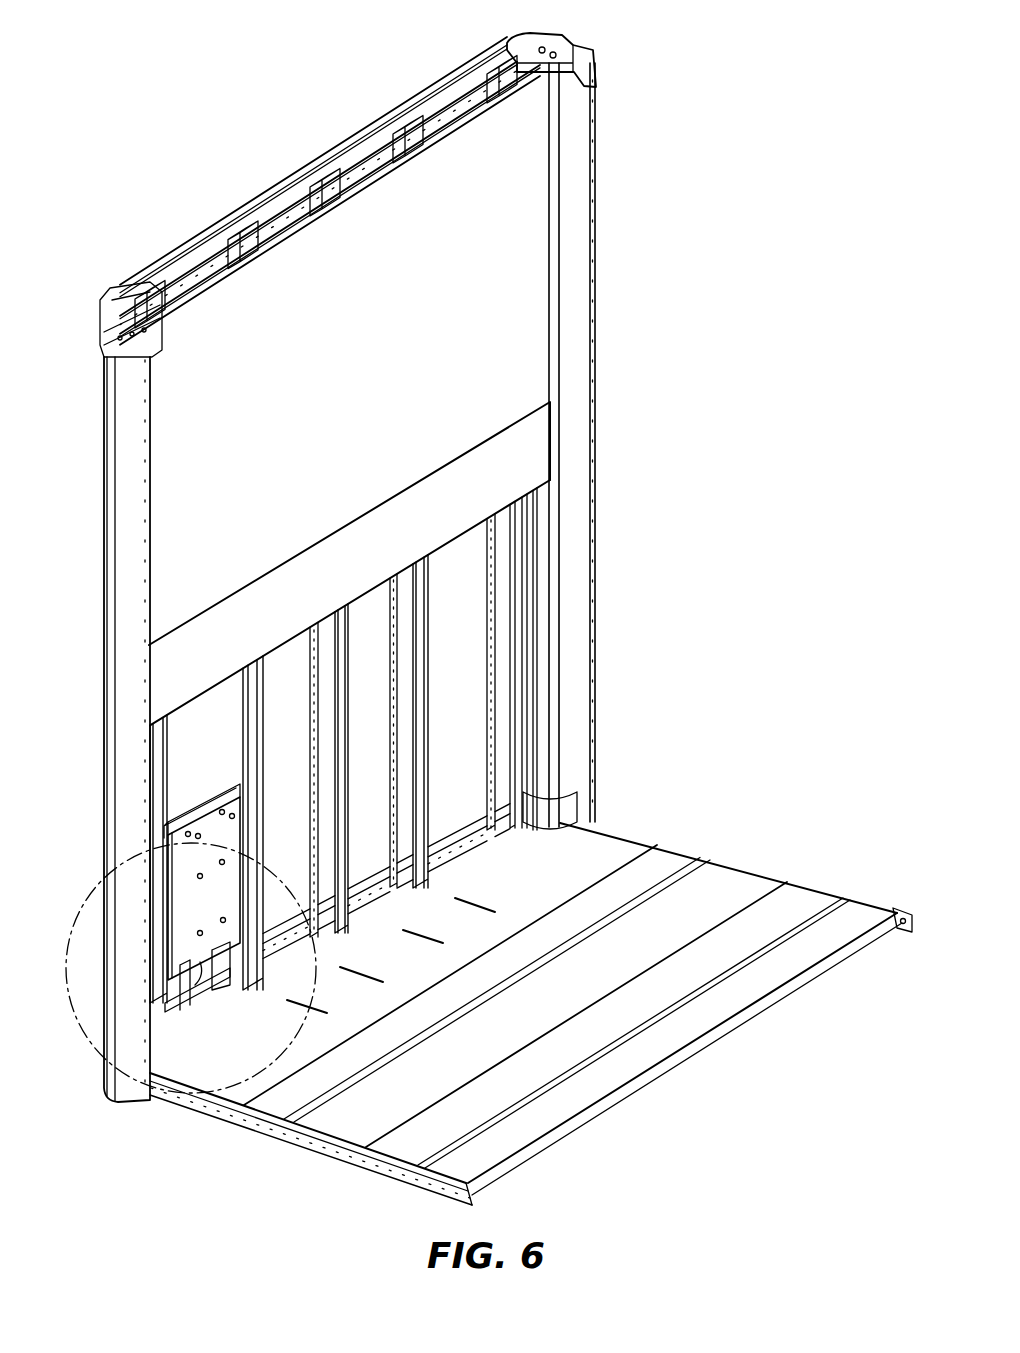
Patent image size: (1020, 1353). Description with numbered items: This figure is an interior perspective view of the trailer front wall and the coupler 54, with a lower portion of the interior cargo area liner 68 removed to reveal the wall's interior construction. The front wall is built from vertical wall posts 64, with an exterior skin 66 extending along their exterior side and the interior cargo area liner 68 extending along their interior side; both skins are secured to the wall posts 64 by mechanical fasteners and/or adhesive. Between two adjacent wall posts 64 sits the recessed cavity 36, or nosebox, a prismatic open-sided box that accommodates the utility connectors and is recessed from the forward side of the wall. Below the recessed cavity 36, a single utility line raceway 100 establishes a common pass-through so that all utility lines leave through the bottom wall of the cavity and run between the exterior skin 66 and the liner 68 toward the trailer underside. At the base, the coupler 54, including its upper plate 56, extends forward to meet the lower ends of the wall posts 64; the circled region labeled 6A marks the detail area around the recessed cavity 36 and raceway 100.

The interior cargo area liner 68 is at (473, 353).
The exterior skin 66 is at (448, 598).
The wall posts 64 is at (242, 685).
The coupler 54 is at (531, 993).
The upper plate 56 is at (718, 897).
The recessed cavity 36 is at (187, 898).
The utility line raceway 100 is at (203, 983).
The detail view 6A indicator 6A is at (100, 878).